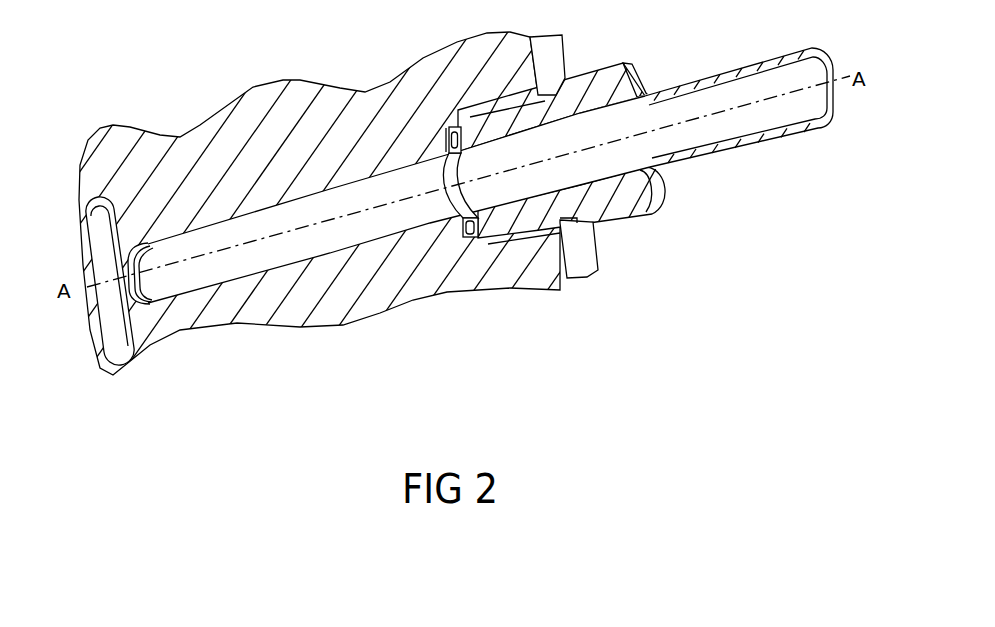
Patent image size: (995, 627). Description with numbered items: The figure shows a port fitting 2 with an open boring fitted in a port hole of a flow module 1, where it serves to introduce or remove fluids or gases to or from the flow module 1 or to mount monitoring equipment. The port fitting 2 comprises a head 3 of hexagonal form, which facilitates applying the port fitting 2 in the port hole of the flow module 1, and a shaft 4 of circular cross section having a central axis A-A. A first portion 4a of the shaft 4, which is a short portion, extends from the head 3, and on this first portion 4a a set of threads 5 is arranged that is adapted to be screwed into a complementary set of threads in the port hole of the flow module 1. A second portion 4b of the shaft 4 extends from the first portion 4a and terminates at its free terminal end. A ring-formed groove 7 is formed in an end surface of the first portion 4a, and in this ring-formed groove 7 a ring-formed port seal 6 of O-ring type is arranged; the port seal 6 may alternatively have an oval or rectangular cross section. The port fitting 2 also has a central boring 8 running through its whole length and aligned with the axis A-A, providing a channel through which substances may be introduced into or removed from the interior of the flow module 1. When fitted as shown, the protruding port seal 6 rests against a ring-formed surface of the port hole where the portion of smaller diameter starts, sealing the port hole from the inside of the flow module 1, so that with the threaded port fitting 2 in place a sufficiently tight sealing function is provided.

The flow module 1 is at (405, 282).
The port fitting 2 is at (613, 223).
The head 3 is at (630, 200).
The shaft 4 is at (530, 220).
The first portion 4a is at (453, 128).
The second portion 4b is at (480, 243).
The set of threads 5 is at (543, 233).
The port seal 6 is at (447, 142).
The ring-formed groove 7 is at (447, 125).
The central boring 8 is at (668, 130).